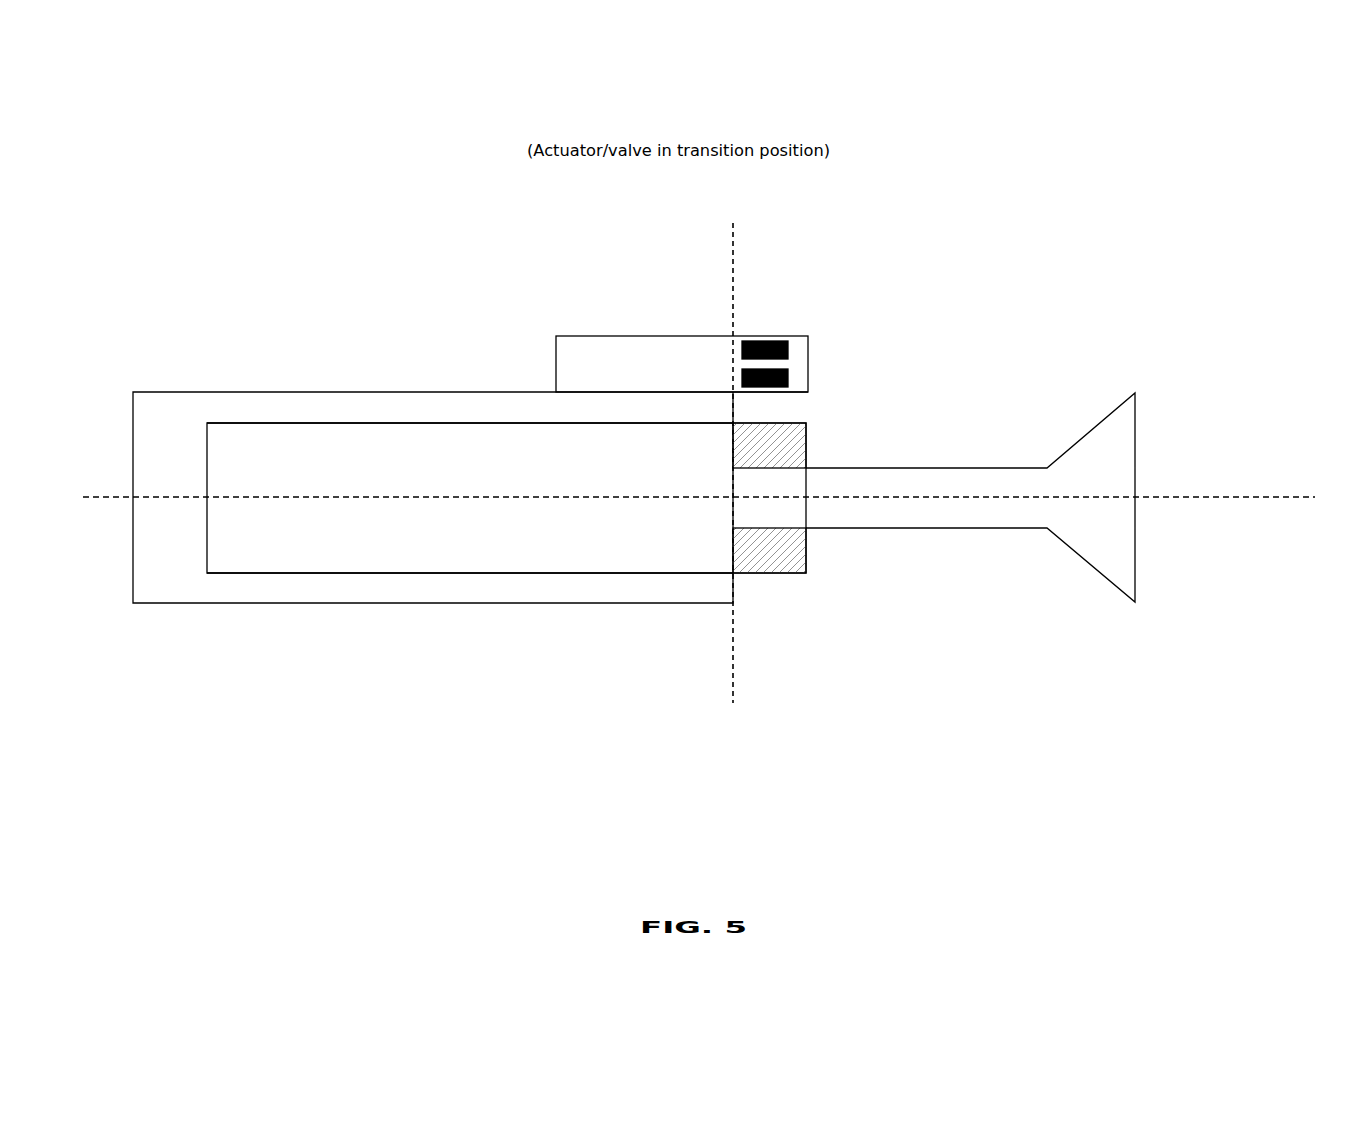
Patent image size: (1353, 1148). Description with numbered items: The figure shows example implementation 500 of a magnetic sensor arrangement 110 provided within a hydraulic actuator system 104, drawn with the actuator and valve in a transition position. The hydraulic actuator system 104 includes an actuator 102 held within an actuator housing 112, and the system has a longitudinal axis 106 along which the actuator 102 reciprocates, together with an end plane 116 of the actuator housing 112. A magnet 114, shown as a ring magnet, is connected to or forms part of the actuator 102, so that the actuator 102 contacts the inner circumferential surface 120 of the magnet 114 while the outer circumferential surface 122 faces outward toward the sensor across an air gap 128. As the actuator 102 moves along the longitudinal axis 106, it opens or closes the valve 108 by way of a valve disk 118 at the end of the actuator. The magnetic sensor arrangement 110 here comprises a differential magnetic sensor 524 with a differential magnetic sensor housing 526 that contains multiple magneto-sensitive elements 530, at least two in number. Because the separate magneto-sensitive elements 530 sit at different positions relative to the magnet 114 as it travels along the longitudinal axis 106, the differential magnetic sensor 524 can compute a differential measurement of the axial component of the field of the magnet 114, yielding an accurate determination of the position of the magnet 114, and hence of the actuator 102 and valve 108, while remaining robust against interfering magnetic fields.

The example implementation 500 is at (205, 92).
The hydraulic actuator system 104 is at (350, 300).
The actuator 102 is at (370, 465).
The actuator housing 112 is at (340, 379).
The outer circumferential surface 122 is at (735, 428).
The inner circumferential surface 120 is at (734, 527).
The magnet 114 is at (935, 441).
The valve disk 118 is at (830, 548).
The valve 108 is at (1136, 426).
The longitudinal axis 106 is at (1288, 593).
The end plane 116 is at (733, 250).
The air gap 128 is at (915, 415).
The magnetic sensor arrangement 110 is at (1155, 235).
The differential magnetic sensor 524 is at (588, 335).
The differential magnetic sensor housing 526 is at (632, 336).
The magneto-sensitive elements 530 is at (796, 356).